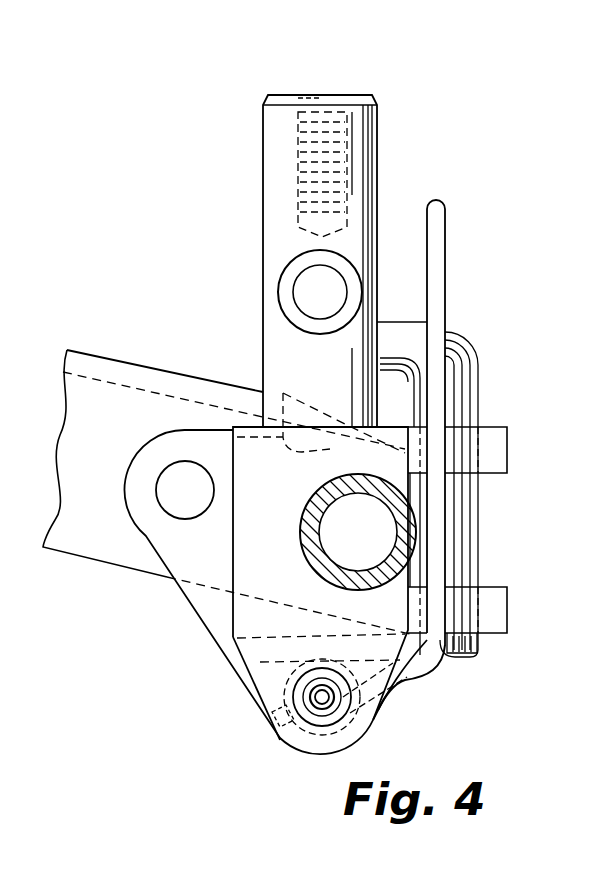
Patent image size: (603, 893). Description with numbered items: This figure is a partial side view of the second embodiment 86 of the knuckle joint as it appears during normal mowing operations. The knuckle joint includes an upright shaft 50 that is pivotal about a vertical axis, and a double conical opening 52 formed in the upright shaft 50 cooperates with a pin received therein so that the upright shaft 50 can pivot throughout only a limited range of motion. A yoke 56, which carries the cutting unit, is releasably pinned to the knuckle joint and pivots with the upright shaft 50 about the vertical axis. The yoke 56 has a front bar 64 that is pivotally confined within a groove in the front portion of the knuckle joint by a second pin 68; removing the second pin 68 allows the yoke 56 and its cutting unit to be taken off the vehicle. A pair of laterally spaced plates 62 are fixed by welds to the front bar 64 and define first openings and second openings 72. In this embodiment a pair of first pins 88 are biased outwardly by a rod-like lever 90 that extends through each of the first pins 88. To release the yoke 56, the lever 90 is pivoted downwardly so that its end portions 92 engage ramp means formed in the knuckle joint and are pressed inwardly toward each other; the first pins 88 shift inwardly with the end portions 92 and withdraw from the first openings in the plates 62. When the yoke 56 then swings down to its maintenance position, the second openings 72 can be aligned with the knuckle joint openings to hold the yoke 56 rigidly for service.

The upright shaft 50 is at (380, 109).
The double conical opening 52 is at (297, 300).
The yoke 56 is at (168, 372).
The laterally spaced plates 62 is at (190, 611).
The front bar 64 is at (310, 565).
The second pin 68 is at (466, 350).
The second openings 72 is at (181, 514).
The second embodiment of the knuckle joint 86 is at (494, 144).
The first pins 88 is at (350, 710).
The rod-like lever 90 is at (447, 231).
The end portions 92 is at (281, 740).